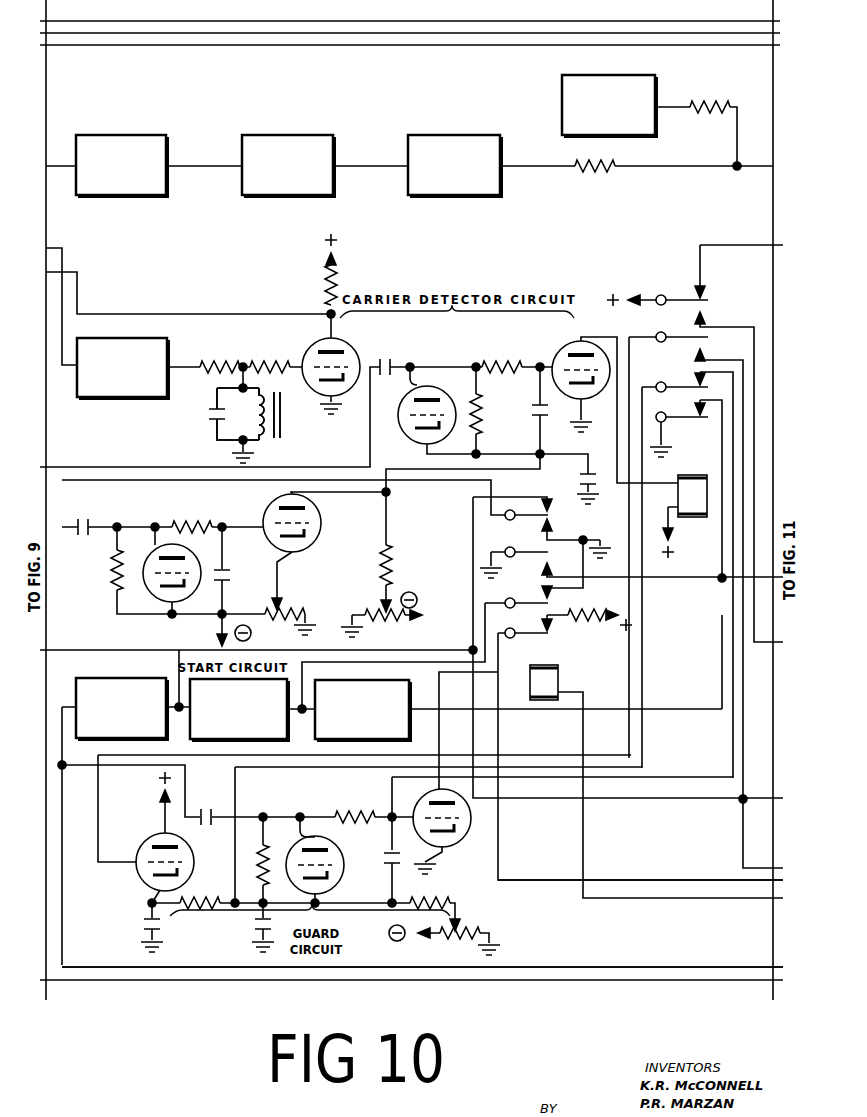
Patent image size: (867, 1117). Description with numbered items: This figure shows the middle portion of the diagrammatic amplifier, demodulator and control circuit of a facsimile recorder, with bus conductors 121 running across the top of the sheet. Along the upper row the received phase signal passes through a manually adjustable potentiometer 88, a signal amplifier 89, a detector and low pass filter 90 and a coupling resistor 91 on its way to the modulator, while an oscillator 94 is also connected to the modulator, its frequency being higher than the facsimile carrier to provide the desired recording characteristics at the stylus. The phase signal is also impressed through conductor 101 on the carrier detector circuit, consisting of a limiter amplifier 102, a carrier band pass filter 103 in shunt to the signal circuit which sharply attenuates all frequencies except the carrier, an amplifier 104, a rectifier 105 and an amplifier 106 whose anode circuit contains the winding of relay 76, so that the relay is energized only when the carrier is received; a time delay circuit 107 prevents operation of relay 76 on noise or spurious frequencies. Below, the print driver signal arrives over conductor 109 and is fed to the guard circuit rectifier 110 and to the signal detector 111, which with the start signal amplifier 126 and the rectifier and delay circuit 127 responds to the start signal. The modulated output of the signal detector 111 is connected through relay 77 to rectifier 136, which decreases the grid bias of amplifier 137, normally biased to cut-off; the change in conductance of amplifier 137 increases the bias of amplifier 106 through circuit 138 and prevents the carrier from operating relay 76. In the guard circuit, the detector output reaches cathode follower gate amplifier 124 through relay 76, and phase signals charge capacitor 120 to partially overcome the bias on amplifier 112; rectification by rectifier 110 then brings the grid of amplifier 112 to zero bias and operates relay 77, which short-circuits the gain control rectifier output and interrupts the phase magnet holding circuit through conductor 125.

The conductors 121 is at (470, 21).
The oscillator 94 is at (562, 86).
The manually adjustable potentiometer 88 is at (137, 196).
The signal amplifier 89 is at (300, 196).
The detector and low pass filter 90 is at (487, 196).
The coupling resistor 91 is at (598, 172).
The conductor 101 is at (62, 262).
The limiter amplifier 102 is at (115, 398).
The carrier band pass filter 103 is at (262, 437).
The amplifier 104 is at (305, 350).
The rectifier 105 is at (418, 378).
The amplifier 106 is at (552, 350).
The time delay circuit 107 is at (512, 421).
The rectifier 136 is at (154, 545).
The amplifier 137 is at (262, 512).
The circuit 138 is at (386, 535).
The relay 76 is at (688, 520).
The signal detector 111 is at (98, 676).
The start signal amplifier 126 is at (182, 700).
The rectifier and delay circuit 127 is at (390, 680).
The relay 77 is at (560, 672).
The guard circuit rectifier 110 is at (302, 830).
The amplifier 112 is at (450, 846).
The cathode follower gate amplifier 124 is at (137, 876).
The capacitor 120 is at (165, 922).
The conductor 125 is at (636, 882).
The conductor 109 is at (527, 967).